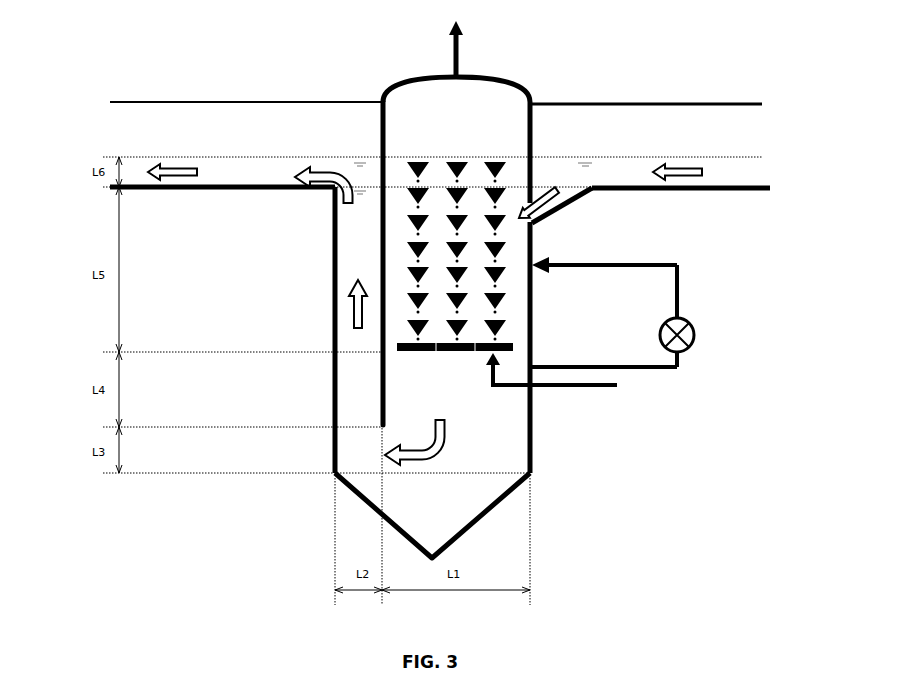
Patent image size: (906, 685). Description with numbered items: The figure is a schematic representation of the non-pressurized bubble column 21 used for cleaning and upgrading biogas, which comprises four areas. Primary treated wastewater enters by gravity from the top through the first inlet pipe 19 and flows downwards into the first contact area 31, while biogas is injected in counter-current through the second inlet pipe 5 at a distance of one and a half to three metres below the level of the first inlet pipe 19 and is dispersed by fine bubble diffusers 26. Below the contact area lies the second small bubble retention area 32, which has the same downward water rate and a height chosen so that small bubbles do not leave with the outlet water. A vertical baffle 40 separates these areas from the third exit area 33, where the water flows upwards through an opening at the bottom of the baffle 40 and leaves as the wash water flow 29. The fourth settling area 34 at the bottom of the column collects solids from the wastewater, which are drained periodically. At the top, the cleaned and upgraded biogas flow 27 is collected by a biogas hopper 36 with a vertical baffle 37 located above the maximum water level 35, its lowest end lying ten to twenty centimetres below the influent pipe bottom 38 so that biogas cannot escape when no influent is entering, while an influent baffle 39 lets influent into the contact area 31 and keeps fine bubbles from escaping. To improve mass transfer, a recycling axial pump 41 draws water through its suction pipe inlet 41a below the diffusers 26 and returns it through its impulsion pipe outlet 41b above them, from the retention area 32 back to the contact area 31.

The second inlet pipe 5 is at (620, 388).
The first inlet pipe 19 is at (650, 146).
The non-pressurized bubble column 21 is at (536, 305).
The fine bubble diffusers 26 is at (450, 355).
The cleaned and upgraded biogas flow 27 is at (463, 49).
The wash water flow 29 is at (222, 318).
The contact area 31 is at (466, 251).
The small bubble retention area 32 is at (512, 442).
The exit area 33 is at (358, 289).
The settling area 34 is at (432, 515).
The maximum water level 35 is at (648, 157).
The biogas hopper 36 is at (515, 78).
The vertical baffle for separating the contact area and the exit area 37 is at (534, 148).
The influent pipe bottom 38 is at (568, 190).
The influent baffle 39 is at (548, 220).
The vertical baffle 40 is at (386, 406).
The recycling axial pump 41 is at (697, 335).
The suction pipe inlet 41a is at (537, 359).
The impulsion pipe outlet 41b is at (540, 268).